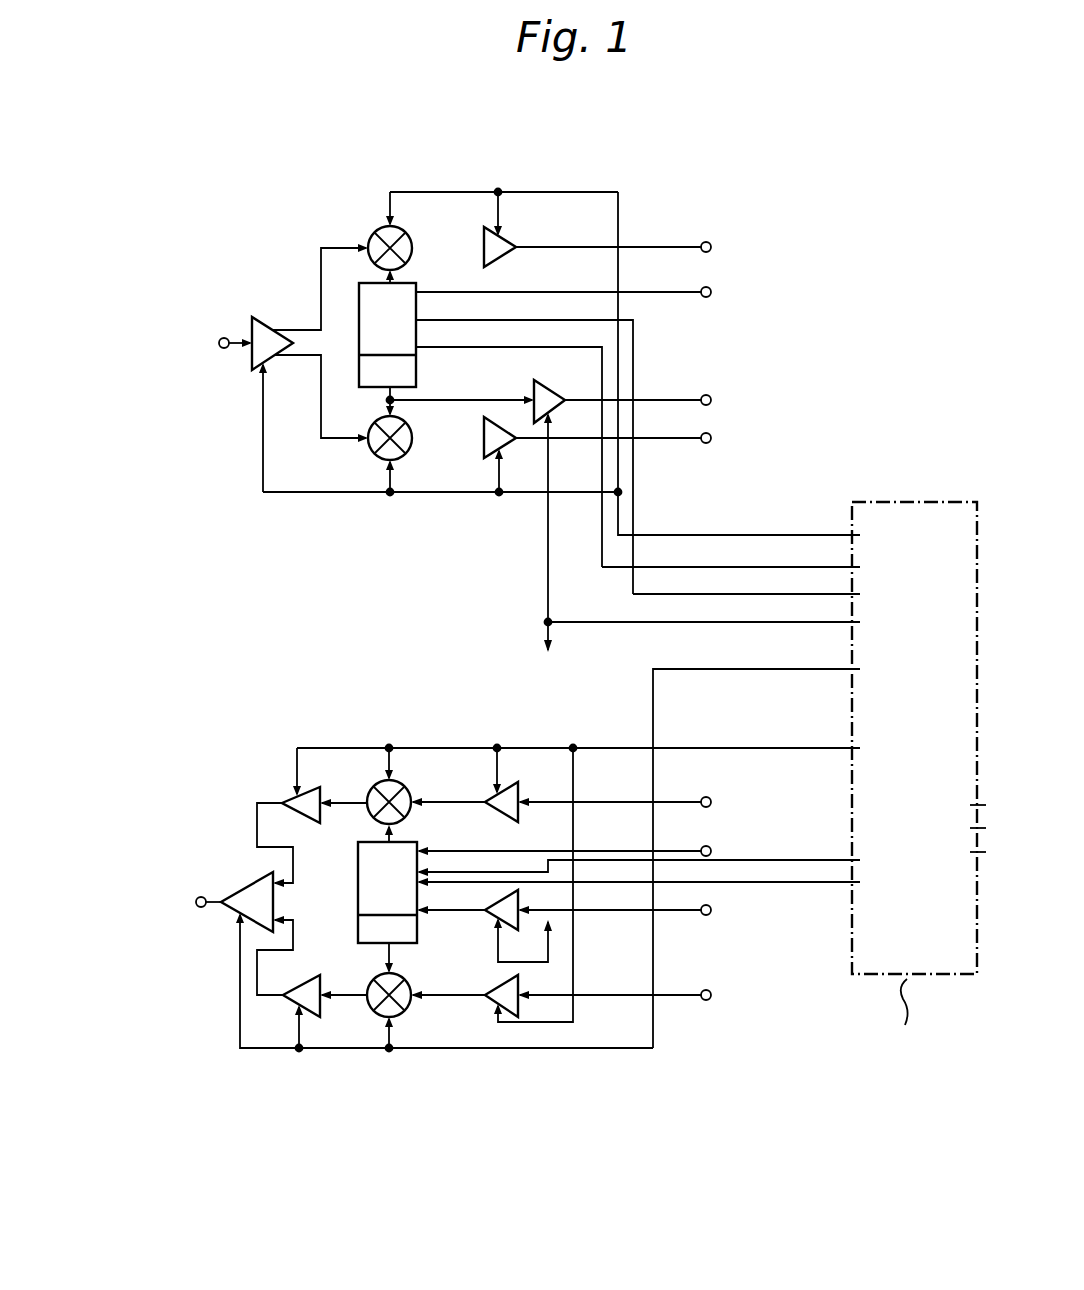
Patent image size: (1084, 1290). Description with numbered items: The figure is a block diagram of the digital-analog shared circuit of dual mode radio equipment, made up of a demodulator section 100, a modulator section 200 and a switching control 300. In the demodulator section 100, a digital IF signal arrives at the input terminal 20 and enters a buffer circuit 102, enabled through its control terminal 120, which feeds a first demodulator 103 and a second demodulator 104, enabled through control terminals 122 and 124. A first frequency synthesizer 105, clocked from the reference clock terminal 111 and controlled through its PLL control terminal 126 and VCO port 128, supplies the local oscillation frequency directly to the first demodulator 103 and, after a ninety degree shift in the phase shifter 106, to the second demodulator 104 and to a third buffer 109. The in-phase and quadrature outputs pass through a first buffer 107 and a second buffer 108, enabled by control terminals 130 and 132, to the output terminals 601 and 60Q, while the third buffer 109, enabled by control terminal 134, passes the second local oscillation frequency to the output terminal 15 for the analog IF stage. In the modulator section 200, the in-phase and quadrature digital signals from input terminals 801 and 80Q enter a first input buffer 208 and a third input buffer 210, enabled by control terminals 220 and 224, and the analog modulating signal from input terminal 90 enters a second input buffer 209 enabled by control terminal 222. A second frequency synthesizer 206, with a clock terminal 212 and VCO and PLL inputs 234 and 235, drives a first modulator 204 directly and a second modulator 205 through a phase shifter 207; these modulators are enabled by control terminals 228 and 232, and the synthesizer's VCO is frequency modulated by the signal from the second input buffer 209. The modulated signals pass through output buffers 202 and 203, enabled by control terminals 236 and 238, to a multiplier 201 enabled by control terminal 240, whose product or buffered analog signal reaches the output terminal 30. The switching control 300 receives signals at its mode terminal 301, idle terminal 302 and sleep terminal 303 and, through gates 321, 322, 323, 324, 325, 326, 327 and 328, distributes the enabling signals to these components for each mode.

The demodulator section 100 is at (388, 512).
The input terminal 20 is at (227, 358).
The buffer circuit 102 is at (252, 317).
The control terminal 120 is at (256, 369).
The first demodulator 103 is at (370, 234).
The control terminal 122 is at (388, 206).
The control terminal 130 is at (494, 214).
The first buffer 107 is at (508, 240).
The output terminal 601 is at (702, 242).
The reference clock terminal 111 is at (702, 292).
The first frequency synthesizer 105 is at (387, 328).
The phase shifter 106 is at (387, 370).
The control terminal 126 is at (524, 447).
The port 128 is at (509, 447).
The second demodulator 104 is at (360, 466).
The control terminal 124 is at (309, 506).
The second buffer 108 is at (475, 470).
The control terminal 132 is at (517, 470).
The third buffer 109 is at (533, 391).
The control terminal 134 is at (555, 418).
The output terminal 15 is at (702, 396).
The output terminal 60Q is at (706, 443).
The switching control 300 is at (922, 500).
The gate 323 is at (765, 371).
The gate 326 is at (759, 567).
The gate 328 is at (774, 594).
The gate 324 is at (732, 622).
The gate 321 is at (784, 851).
The gate 322 is at (606, 748).
The gate 325 is at (666, 860).
The gate 327 is at (666, 882).
The mode terminal 301 is at (983, 805).
The idle terminal 302 is at (973, 828).
The sleep terminal 303 is at (980, 852).
The modulator section 200 is at (390, 1082).
The output terminal 30 is at (206, 896).
The output buffer 202 is at (300, 808).
The control terminal 236 is at (302, 784).
The multiplier 201 is at (269, 868).
The output buffer 203 is at (302, 958).
The control terminal 240 is at (240, 922).
The first modulator 204 is at (376, 782).
The control terminal 228 is at (405, 778).
The first input buffer 208 is at (506, 821).
The control terminal 220 is at (496, 796).
The input terminal 801 is at (704, 798).
The clock input terminal 212 is at (702, 846).
The control terminal 234 is at (427, 850).
The second frequency synthesizer 206 is at (412, 892).
The phase shifter 207 is at (387, 944).
The control terminal 235 is at (424, 915).
The control terminal 222 is at (441, 957).
The second input buffer 209 is at (510, 930).
The input terminal 90 is at (704, 915).
The second modulator 205 is at (292, 1002).
The control terminal 232 is at (384, 1032).
The control terminal 238 is at (304, 1018).
The third input buffer 210 is at (488, 1002).
The control terminal 224 is at (502, 1022).
The input terminal 80Q is at (706, 1000).